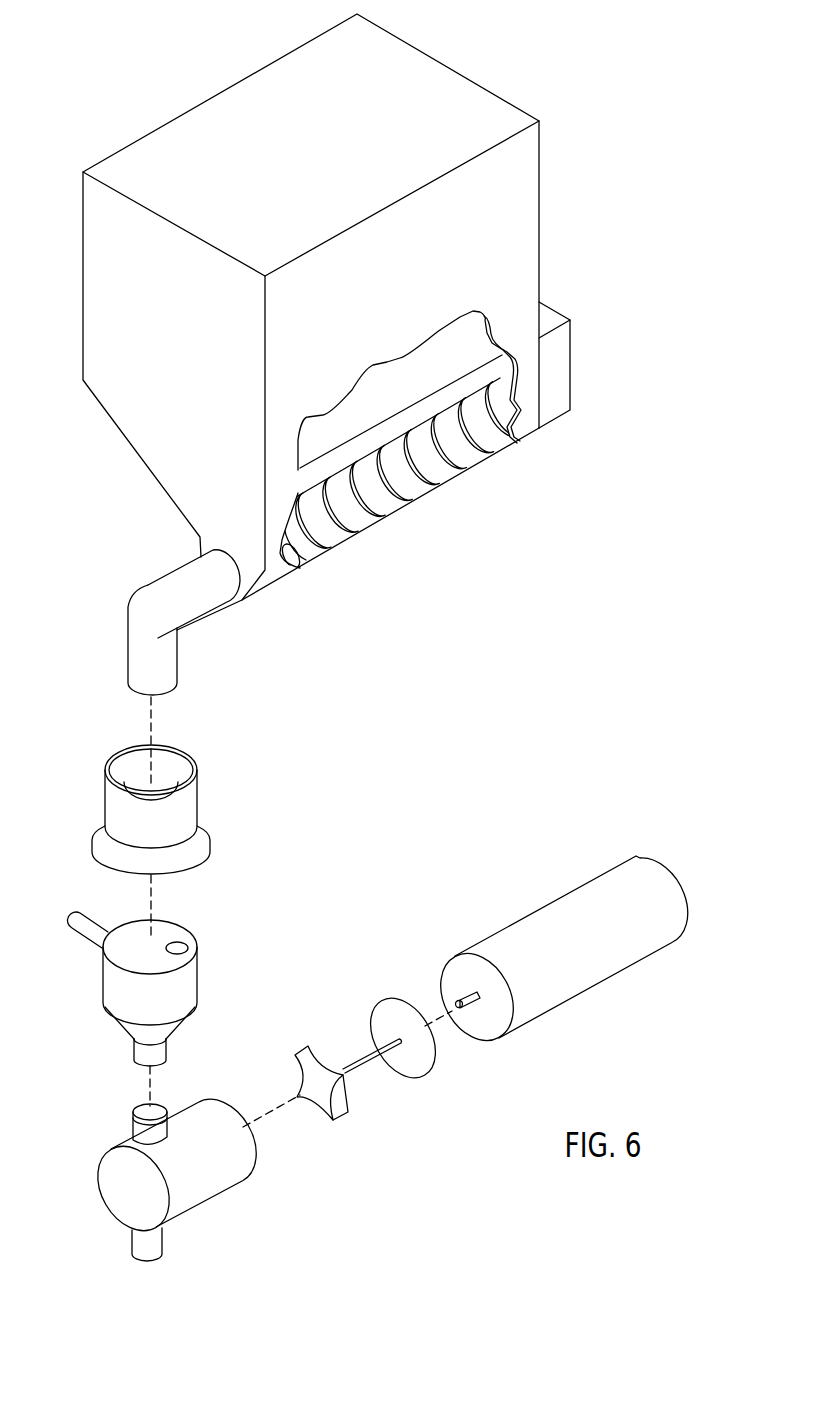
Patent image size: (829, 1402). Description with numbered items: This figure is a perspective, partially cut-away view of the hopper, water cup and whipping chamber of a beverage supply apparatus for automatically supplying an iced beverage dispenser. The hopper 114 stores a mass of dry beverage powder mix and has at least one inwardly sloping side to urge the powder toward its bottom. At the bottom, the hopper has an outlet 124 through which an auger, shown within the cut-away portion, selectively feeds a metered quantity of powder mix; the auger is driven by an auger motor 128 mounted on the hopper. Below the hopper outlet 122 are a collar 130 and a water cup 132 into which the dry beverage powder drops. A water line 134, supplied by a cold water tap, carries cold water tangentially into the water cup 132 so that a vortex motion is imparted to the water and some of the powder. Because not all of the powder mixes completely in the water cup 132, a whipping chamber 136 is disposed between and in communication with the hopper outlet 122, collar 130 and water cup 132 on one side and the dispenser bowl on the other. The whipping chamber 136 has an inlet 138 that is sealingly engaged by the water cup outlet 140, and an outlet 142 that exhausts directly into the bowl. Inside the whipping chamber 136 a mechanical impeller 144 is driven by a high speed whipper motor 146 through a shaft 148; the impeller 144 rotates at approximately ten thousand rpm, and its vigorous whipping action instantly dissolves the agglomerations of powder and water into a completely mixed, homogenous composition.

The hopper 114 is at (525, 232).
The auger motor 128 is at (562, 367).
The hopper outlet 122 is at (158, 592).
The outlet 124 is at (386, 492).
The collar 130 is at (190, 800).
The water cup 132 is at (188, 987).
The water line 134 is at (82, 912).
The whipping chamber 136 is at (210, 1183).
The inlet 138 is at (140, 1130).
The water cup outlet 140 is at (158, 1050).
The whipping chamber outlet 142 is at (140, 1245).
The impeller 144 is at (343, 1112).
The whipper motor 146 is at (595, 890).
The shaft 148 is at (467, 992).